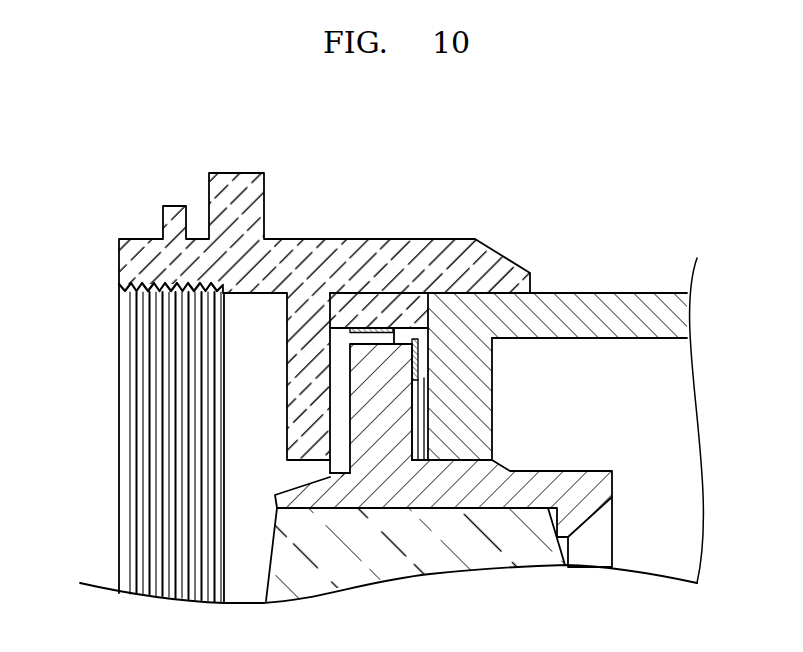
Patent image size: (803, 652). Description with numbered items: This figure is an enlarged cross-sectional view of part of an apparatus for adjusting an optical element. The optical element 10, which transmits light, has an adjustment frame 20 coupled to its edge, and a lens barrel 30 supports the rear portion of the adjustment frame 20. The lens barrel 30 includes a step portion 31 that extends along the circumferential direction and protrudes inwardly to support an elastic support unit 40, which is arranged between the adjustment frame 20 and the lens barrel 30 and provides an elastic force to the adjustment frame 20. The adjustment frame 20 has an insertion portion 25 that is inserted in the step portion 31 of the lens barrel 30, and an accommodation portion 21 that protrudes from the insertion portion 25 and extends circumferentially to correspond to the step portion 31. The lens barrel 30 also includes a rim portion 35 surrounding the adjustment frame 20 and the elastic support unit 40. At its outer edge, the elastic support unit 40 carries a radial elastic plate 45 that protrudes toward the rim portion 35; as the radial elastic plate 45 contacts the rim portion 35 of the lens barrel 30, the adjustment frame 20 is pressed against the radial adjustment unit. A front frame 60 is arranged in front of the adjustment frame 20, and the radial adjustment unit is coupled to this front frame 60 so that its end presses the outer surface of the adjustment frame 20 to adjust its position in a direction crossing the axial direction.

The optical element 10 is at (290, 558).
The adjustment frame 20 is at (569, 458).
The accommodation portion 21 is at (362, 407).
The insertion portion 25 is at (606, 470).
The lens barrel 30 is at (634, 284).
The step portion 31 is at (490, 378).
The rim portion 35 is at (352, 302).
The elastic support unit 40 is at (429, 322).
The radial elastic plate 45 is at (372, 327).
The front frame 60 is at (110, 259).